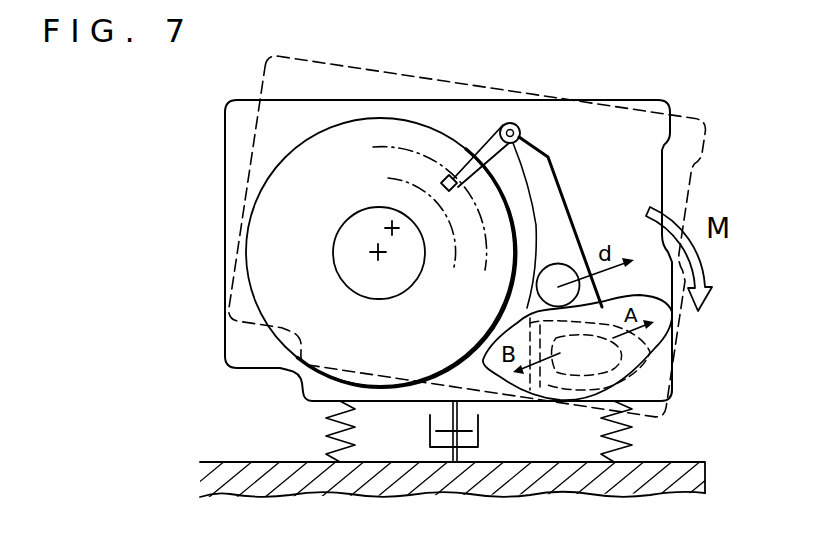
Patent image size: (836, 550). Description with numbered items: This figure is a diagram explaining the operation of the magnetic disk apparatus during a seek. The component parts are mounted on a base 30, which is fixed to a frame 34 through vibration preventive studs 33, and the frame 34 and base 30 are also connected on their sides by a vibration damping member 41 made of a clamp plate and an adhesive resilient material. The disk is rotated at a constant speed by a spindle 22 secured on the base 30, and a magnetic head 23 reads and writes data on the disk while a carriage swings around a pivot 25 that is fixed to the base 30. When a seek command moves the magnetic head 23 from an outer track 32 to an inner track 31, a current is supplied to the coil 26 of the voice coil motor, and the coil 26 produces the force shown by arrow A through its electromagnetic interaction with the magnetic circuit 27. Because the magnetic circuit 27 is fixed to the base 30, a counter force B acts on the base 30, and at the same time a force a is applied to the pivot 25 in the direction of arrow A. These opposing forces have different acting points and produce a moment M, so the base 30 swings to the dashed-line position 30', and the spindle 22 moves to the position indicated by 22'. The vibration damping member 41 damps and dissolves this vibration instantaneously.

The spindle 22 is at (352, 256).
The moved spindle position 22' is at (390, 286).
The magnetic head 23 is at (448, 176).
The pivot 25 is at (556, 276).
The coil 26 is at (562, 388).
The magnetic circuit 27 is at (671, 340).
The base 30 is at (411, 250).
The swung base position 30' is at (465, 220).
The inner track 31 is at (393, 175).
The outer track 32 is at (394, 143).
The vibration preventive studs 33 is at (325, 436).
The frame 34 is at (522, 483).
The vibration damping member 41 is at (430, 436).